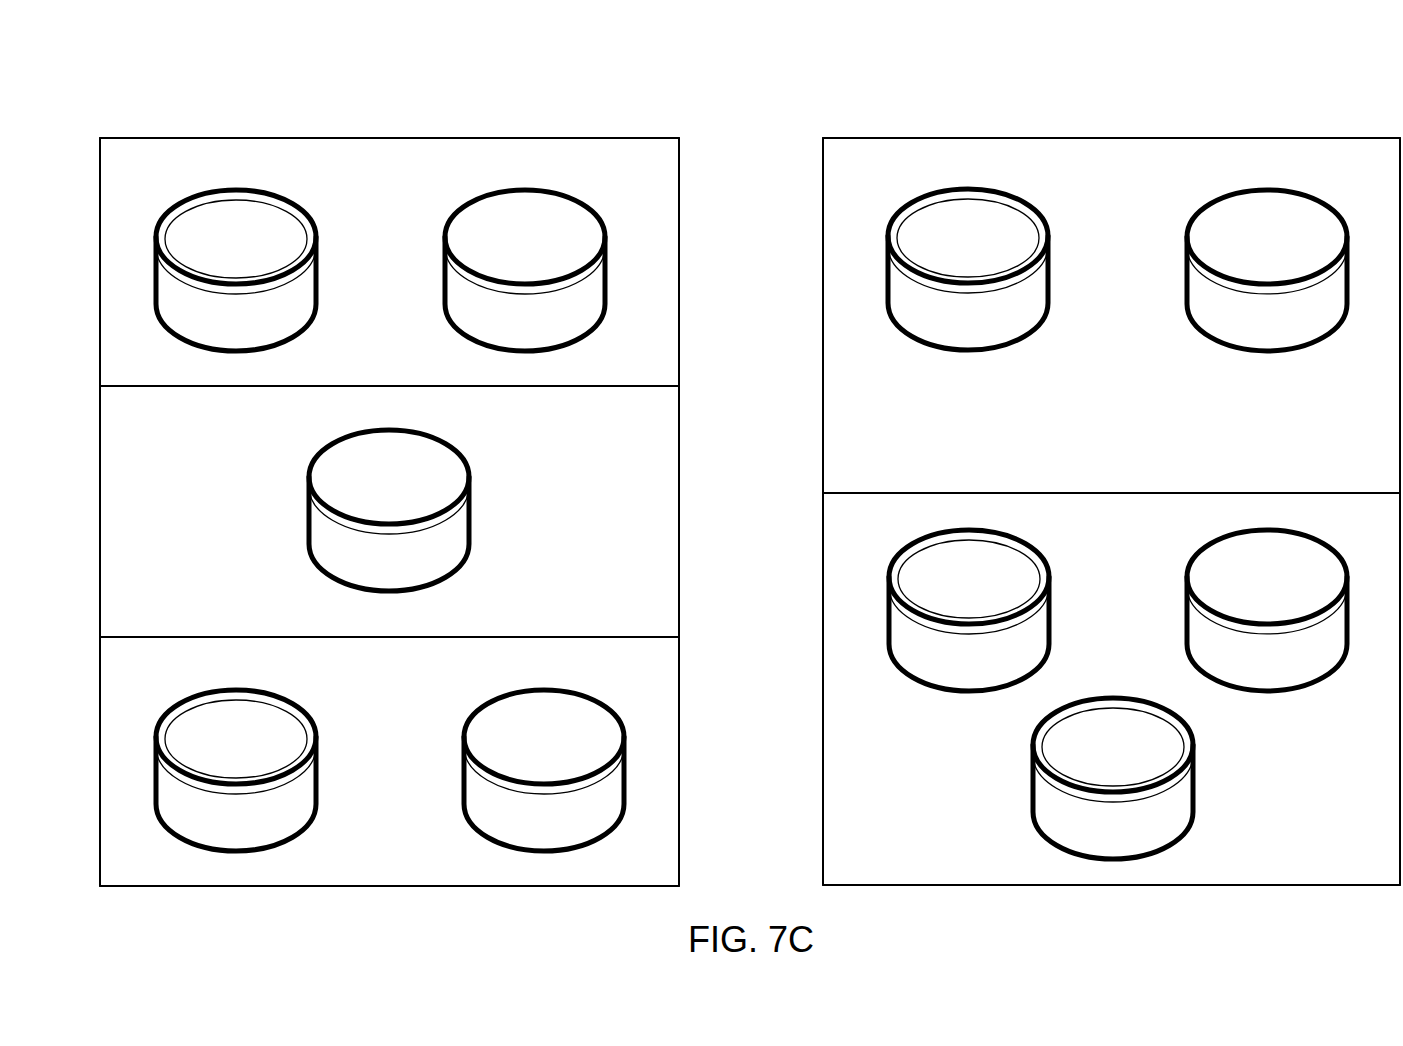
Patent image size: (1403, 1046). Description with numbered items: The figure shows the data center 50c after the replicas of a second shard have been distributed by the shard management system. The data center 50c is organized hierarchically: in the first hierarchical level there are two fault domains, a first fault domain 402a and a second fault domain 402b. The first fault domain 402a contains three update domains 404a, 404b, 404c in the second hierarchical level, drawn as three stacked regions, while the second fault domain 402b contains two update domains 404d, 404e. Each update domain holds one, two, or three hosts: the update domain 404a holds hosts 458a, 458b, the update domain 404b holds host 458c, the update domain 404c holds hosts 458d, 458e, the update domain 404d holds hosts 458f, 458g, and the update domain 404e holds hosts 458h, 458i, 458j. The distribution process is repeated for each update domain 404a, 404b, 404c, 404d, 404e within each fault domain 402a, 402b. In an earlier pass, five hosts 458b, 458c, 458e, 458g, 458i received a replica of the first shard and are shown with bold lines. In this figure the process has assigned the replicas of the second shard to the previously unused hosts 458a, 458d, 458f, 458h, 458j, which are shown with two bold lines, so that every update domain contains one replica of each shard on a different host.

The data center 50c is at (163, 93).
The first fault domain 402a is at (404, 138).
The second fault domain 402b is at (1080, 138).
The update domain 404a is at (679, 200).
The update domain 404b is at (679, 480).
The update domain 404c is at (679, 722).
The update domain 404d is at (823, 288).
The update domain 404e is at (823, 590).
The host 458a is at (305, 213).
The host 458b is at (587, 210).
The host 458c is at (468, 465).
The host 458d is at (310, 712).
The host 458e is at (608, 705).
The host 458f is at (1037, 216).
The host 458g is at (1330, 208).
The host 458h is at (1048, 580).
The host 458i is at (1188, 572).
The host 458j is at (1192, 795).